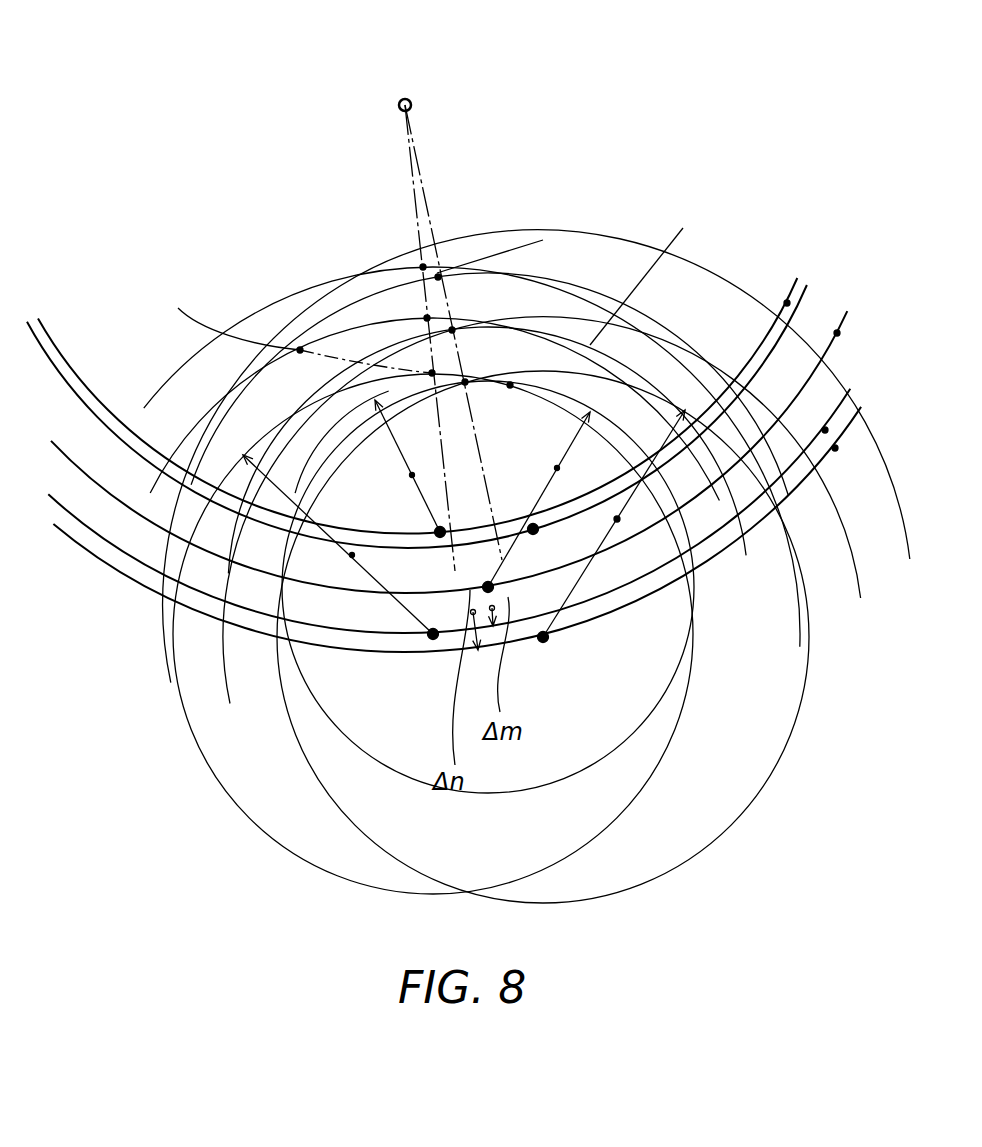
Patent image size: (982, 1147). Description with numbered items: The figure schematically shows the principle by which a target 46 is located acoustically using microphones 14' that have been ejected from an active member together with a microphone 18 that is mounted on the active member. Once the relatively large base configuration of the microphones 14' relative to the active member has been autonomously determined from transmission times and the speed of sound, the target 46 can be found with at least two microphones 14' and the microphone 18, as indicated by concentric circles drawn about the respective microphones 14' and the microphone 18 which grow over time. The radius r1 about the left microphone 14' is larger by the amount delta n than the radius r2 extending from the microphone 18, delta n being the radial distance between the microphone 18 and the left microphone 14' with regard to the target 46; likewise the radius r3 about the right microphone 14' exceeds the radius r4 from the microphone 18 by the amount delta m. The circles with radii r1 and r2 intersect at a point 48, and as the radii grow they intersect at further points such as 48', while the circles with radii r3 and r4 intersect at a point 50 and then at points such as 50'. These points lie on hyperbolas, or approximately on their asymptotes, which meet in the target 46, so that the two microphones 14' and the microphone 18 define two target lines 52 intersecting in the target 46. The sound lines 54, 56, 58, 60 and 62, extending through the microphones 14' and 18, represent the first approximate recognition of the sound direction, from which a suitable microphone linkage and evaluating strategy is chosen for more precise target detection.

The microphone 14' is at (491, 637).
The microphone 18 is at (490, 587).
The target 46 is at (410, 100).
The point 48 is at (333, 315).
The point 48' is at (340, 259).
The point 50 is at (488, 364).
The point 50' is at (519, 281).
The target line 52 is at (432, 288).
The sound line 54 is at (787, 303).
The sound line 56 is at (805, 300).
The sound line 58 is at (837, 333).
The sound line 60 is at (825, 430).
The sound line 62 is at (835, 448).
The radius r1 is at (352, 555).
The radius r2 is at (412, 475).
The radius r3 is at (617, 521).
The radius r4 is at (557, 468).